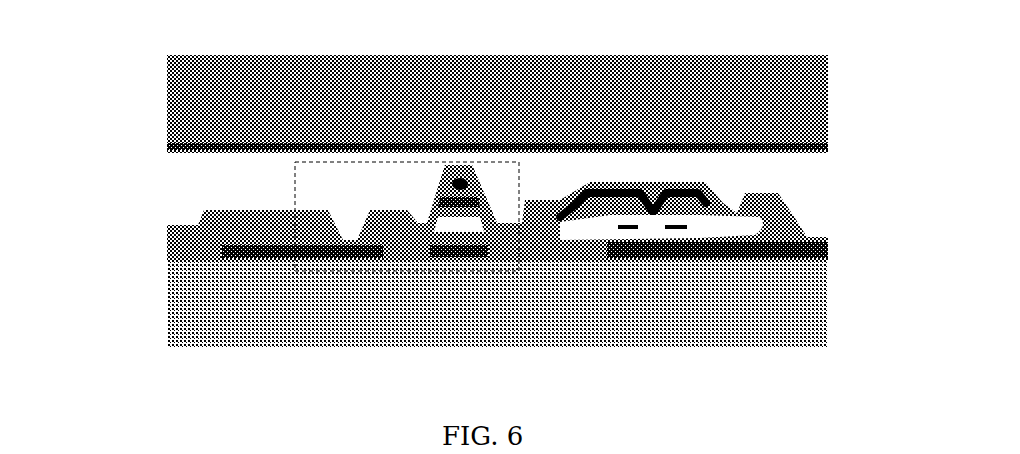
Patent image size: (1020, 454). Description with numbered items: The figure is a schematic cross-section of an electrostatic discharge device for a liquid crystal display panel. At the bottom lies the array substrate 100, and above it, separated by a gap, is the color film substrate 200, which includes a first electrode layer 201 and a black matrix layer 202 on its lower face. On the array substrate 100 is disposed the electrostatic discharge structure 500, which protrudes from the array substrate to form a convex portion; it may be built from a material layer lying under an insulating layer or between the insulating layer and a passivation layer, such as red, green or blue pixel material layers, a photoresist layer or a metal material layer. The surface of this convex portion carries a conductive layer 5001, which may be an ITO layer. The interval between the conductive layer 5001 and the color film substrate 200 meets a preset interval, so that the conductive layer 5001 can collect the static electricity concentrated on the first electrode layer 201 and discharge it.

The array substrate 100 is at (138, 298).
The color film substrate 200 is at (130, 98).
The first electrode layer 201 is at (183, 150).
The black matrix layer 202 is at (828, 149).
The electrostatic discharge structure 500 is at (405, 271).
The conductive layer 5001 is at (455, 165).